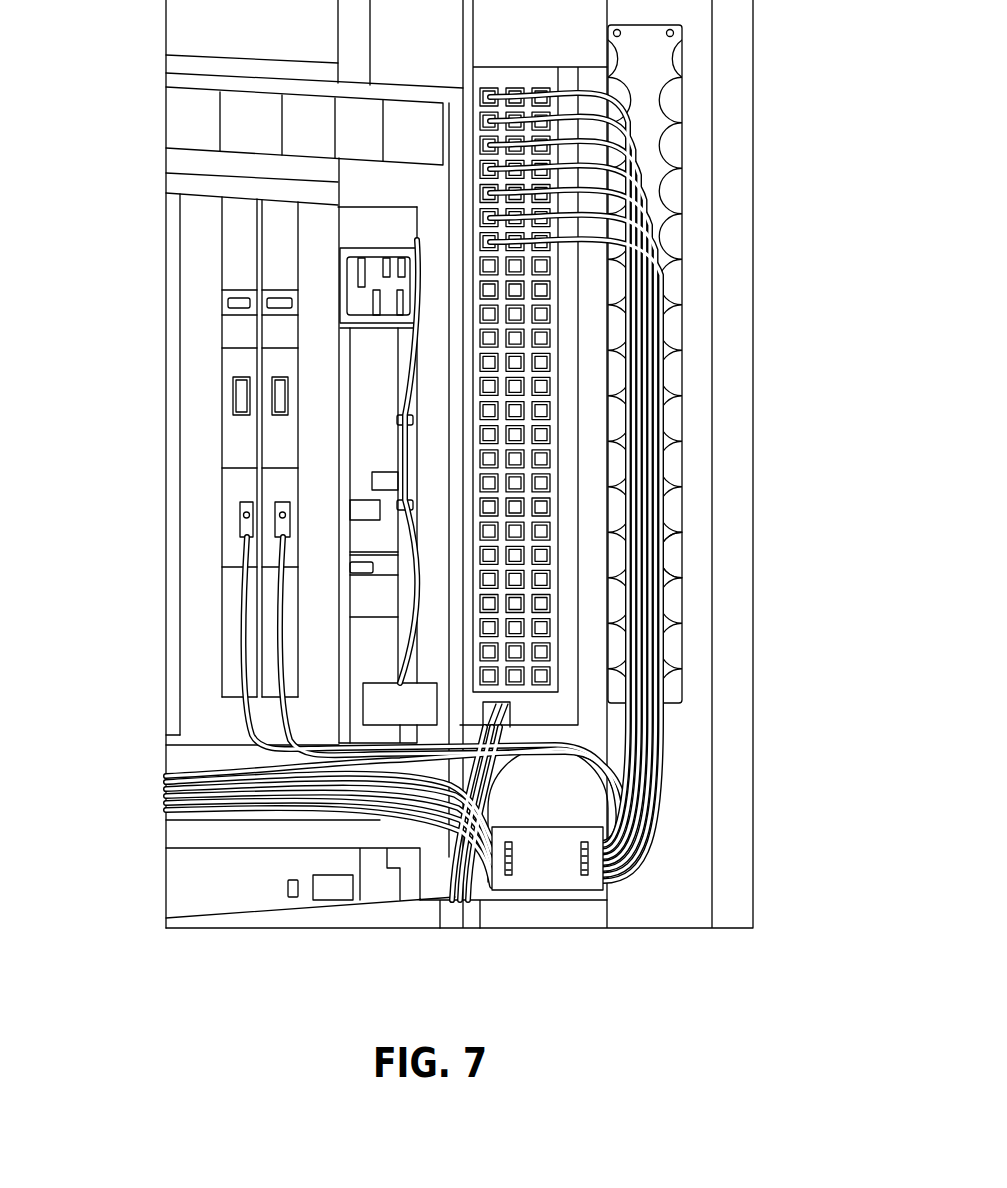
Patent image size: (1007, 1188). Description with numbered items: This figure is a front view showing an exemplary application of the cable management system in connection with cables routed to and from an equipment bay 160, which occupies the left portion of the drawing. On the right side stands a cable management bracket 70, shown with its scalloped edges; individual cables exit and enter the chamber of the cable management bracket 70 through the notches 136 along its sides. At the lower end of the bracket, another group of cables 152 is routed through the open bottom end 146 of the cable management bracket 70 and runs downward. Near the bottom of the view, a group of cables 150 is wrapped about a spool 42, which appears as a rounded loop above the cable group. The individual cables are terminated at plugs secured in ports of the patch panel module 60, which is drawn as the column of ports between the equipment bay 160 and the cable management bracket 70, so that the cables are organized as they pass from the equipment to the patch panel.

The spool 42 is at (588, 818).
The patch panel module 60 is at (680, 170).
The cable management bracket 70 is at (680, 233).
The notches 136 is at (655, 160).
The open bottom end 146 is at (675, 558).
The group of cables 150 is at (583, 882).
The group of cables 152 is at (673, 733).
The equipment bay 160 is at (145, 92).